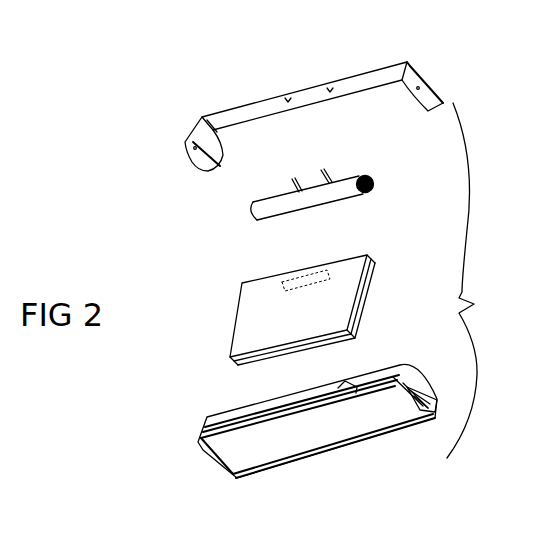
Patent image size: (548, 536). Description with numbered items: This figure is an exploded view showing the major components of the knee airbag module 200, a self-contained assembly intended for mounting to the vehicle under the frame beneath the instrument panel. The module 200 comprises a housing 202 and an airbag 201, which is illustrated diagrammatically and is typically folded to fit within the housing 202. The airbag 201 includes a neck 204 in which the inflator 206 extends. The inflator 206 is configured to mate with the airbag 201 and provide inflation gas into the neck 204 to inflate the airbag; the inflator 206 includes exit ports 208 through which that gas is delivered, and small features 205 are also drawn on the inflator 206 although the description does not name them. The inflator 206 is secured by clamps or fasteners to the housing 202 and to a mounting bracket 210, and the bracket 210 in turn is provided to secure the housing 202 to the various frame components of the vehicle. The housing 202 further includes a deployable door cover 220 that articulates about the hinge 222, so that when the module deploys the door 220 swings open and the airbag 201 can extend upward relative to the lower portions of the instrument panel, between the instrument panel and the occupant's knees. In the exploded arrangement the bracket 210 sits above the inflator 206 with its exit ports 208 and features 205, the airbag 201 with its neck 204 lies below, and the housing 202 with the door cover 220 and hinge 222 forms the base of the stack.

The knee airbag module 200 is at (486, 280).
The airbag 201 is at (259, 309).
The housing 202 is at (287, 447).
The neck 204 is at (348, 252).
The pins 205 is at (345, 146).
The inflator 206 is at (343, 177).
The exit ports 208 is at (250, 214).
The mounting bracket 210 is at (349, 78).
The door cover 220 is at (378, 425).
The hinge 222 is at (356, 384).